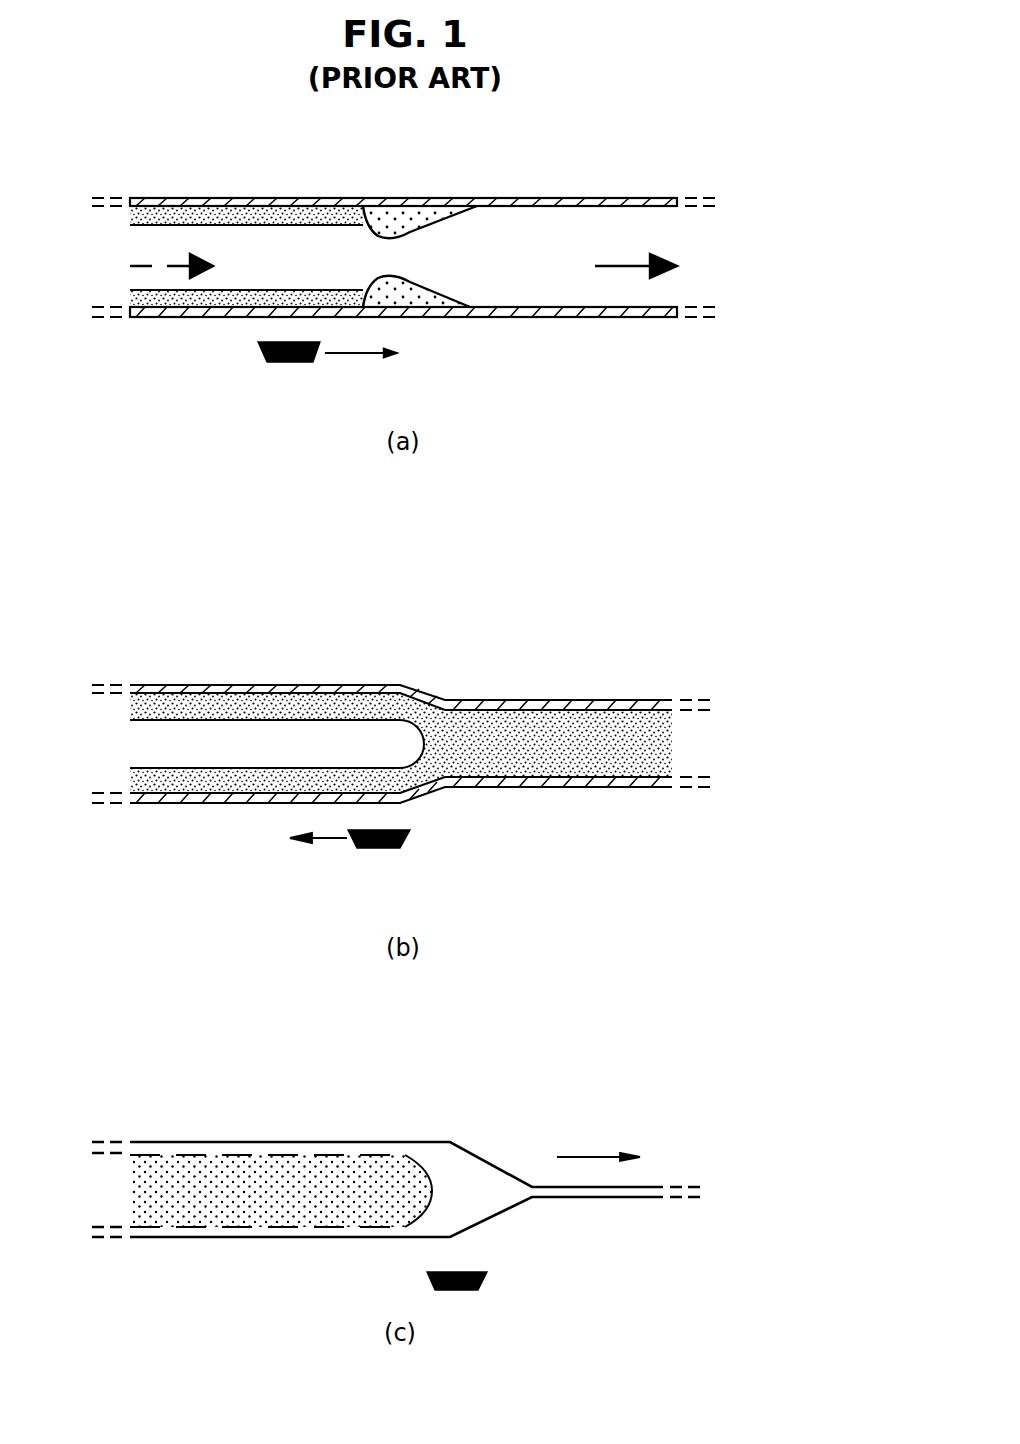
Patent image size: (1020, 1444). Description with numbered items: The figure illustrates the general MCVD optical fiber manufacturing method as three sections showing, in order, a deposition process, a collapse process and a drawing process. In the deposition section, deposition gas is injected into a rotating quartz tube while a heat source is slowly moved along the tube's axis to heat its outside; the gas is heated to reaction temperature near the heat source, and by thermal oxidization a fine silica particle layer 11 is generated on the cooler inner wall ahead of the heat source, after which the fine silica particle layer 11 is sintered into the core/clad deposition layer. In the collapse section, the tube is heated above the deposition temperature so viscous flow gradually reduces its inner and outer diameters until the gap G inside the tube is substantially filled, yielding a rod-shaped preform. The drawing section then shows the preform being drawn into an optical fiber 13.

The fine silica particle layer 11 is at (400, 208).
The drawn capillary 13 is at (622, 1198).
The gap G is at (378, 740).